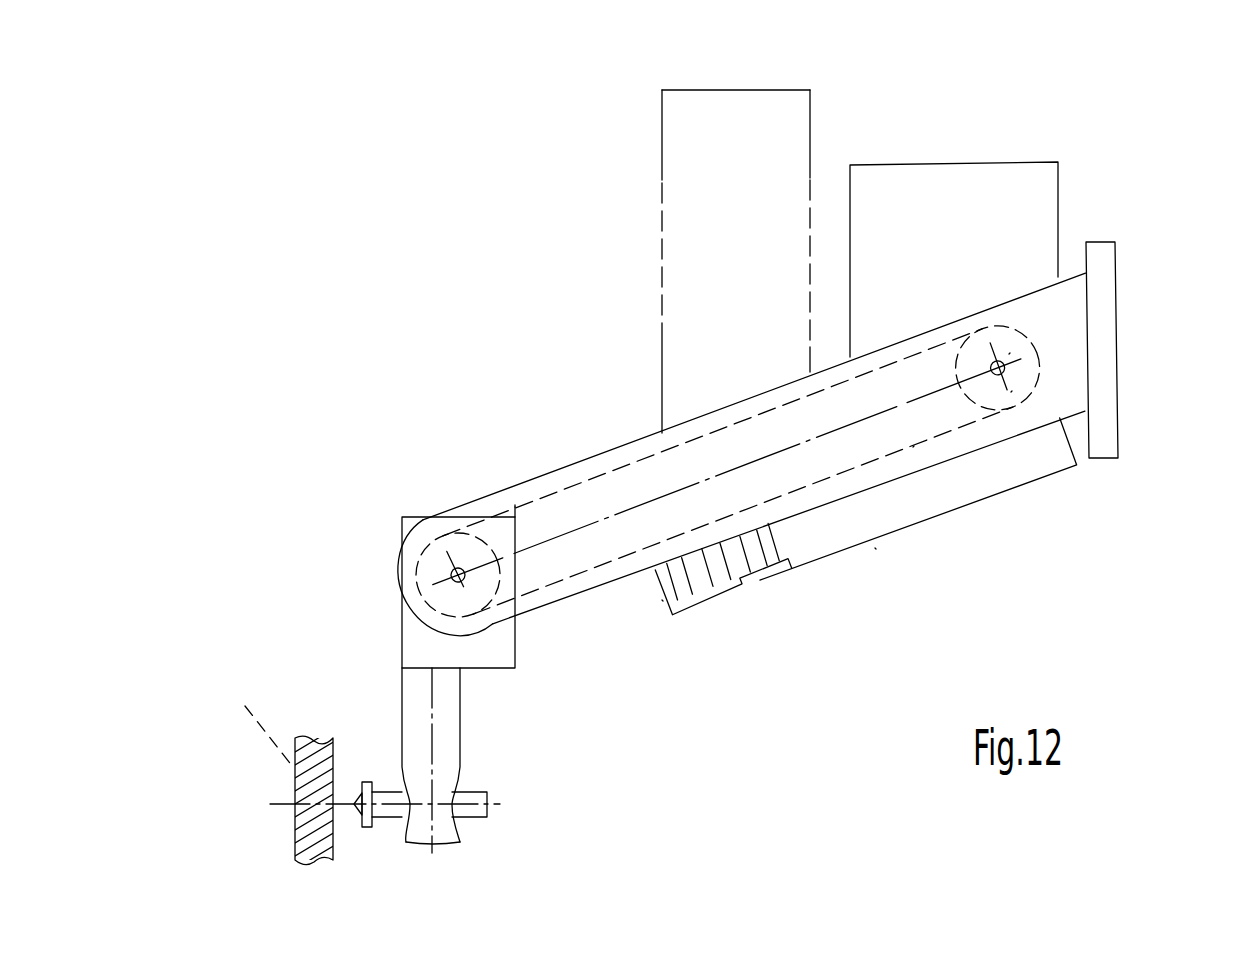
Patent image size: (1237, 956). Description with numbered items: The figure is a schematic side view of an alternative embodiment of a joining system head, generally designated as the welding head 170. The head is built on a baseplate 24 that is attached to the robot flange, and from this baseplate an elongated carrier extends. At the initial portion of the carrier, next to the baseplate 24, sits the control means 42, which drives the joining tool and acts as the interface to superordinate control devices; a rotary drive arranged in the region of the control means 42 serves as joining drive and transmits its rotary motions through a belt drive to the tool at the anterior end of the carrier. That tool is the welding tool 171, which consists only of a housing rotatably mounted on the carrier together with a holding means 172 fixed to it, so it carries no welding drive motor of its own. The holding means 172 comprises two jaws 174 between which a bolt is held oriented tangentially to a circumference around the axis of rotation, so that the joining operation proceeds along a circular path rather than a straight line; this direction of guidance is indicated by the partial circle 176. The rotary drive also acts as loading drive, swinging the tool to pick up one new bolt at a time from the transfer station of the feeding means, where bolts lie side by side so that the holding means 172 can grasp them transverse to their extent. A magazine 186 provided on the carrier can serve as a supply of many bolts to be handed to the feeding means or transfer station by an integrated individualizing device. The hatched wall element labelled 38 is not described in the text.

The welding head 170 is at (476, 213).
The magazine 186 is at (693, 168).
The control means 42 is at (1040, 187).
The baseplate 24 is at (1100, 275).
The welding tool 171 is at (397, 507).
The holding means 172 is at (372, 638).
The jaws 174 is at (418, 715).
The partial circle 176 is at (243, 703).
The wall 38 is at (295, 782).